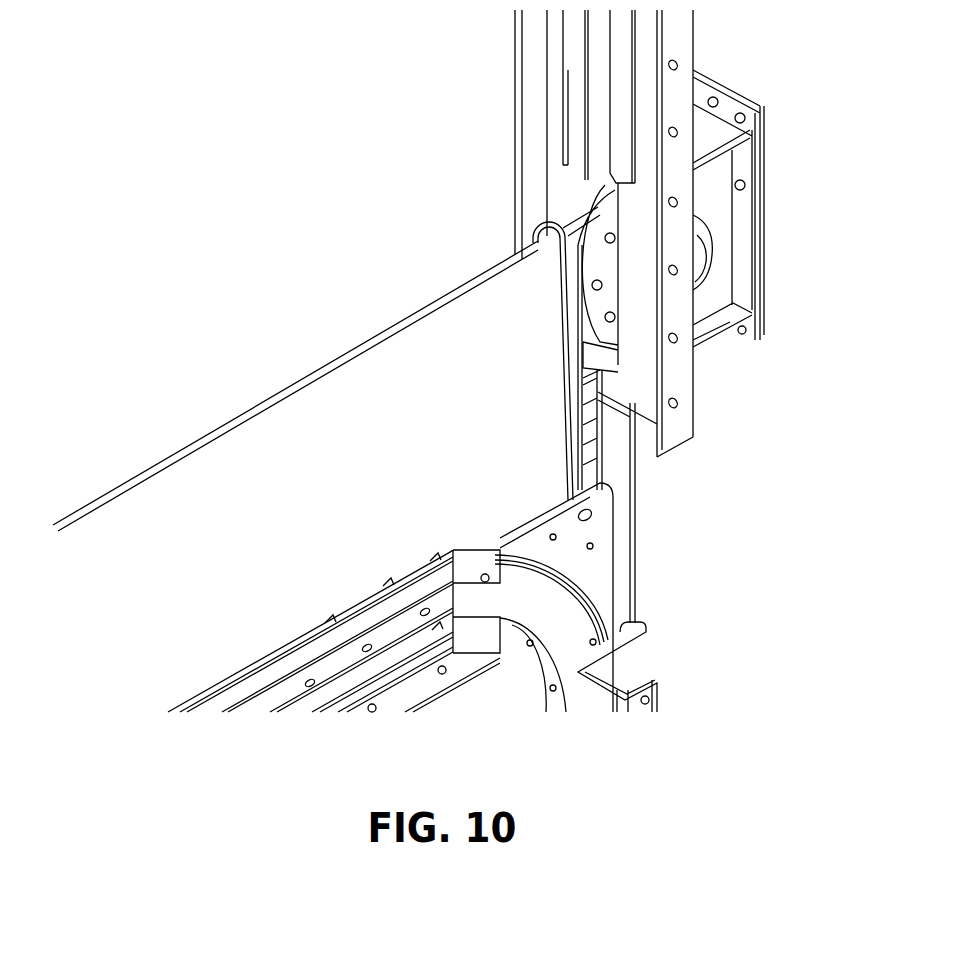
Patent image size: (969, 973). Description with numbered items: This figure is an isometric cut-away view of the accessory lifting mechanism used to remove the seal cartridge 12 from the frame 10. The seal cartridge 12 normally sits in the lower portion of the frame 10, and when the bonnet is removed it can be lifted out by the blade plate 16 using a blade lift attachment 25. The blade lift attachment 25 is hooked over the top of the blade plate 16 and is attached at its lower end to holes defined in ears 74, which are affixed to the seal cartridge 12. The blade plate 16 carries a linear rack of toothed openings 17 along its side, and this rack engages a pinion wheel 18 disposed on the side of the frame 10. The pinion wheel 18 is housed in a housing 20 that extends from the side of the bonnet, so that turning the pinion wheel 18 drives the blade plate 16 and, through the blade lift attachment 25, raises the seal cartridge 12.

The frame 10 is at (680, 43).
The seal cartridge 12 is at (548, 602).
The blade plate 16 is at (368, 455).
The linear rack of toothed openings 17 is at (588, 385).
The pinion wheel 18 is at (607, 268).
The housing 20 is at (713, 300).
The blade lift attachment 25 is at (577, 442).
The ear 74 is at (600, 592).